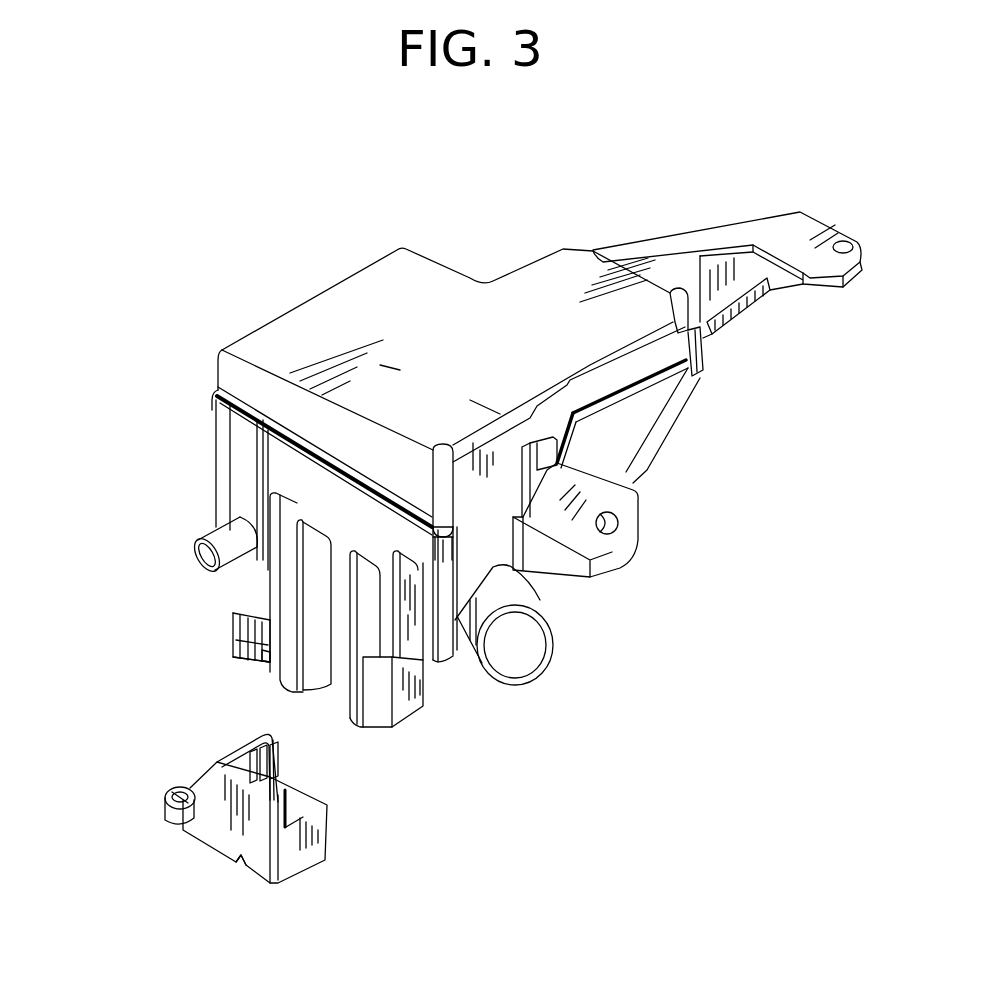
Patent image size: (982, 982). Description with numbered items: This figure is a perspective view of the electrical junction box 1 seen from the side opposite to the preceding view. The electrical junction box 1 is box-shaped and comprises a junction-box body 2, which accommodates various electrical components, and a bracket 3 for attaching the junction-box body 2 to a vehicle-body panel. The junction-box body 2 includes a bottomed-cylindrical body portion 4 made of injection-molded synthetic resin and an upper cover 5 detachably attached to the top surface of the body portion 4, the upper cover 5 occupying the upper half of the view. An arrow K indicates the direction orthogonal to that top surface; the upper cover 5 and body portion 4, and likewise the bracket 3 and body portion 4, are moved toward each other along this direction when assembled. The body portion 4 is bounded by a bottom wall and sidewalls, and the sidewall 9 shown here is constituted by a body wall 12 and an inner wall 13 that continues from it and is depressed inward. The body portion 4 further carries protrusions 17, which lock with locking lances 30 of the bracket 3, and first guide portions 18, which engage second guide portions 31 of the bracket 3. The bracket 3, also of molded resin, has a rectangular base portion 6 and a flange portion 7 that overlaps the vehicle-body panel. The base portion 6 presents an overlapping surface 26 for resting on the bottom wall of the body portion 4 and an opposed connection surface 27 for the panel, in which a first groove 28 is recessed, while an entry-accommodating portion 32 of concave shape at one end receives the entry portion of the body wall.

The electrical junction box 1 is at (472, 398).
The junction-box body 2 is at (727, 347).
The bracket 3 is at (229, 823).
The body portion 4 is at (662, 412).
The upper cover 5 is at (647, 352).
The base portion 6 is at (222, 817).
The flange portion 7 is at (166, 803).
The sidewall 9 is at (161, 655).
The body wall 12 is at (247, 600).
The inner wall 13 is at (253, 653).
The protrusion 17 is at (263, 661).
The first guide portion 18 is at (257, 650).
The overlapping surface 26 is at (295, 808).
The connection surface 27 is at (327, 860).
The first groove 28 is at (238, 865).
The locking lance 30 is at (287, 762).
The second guide portion 31 is at (288, 788).
The entry-accommodating portion 32 is at (247, 744).